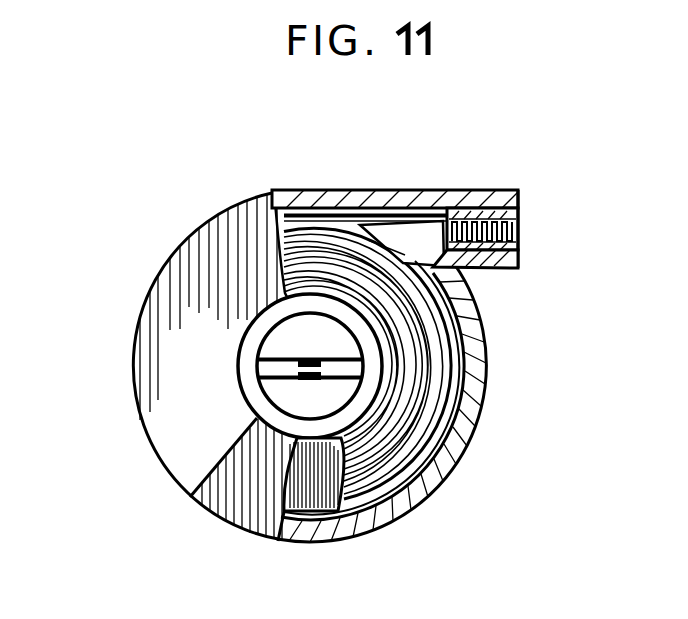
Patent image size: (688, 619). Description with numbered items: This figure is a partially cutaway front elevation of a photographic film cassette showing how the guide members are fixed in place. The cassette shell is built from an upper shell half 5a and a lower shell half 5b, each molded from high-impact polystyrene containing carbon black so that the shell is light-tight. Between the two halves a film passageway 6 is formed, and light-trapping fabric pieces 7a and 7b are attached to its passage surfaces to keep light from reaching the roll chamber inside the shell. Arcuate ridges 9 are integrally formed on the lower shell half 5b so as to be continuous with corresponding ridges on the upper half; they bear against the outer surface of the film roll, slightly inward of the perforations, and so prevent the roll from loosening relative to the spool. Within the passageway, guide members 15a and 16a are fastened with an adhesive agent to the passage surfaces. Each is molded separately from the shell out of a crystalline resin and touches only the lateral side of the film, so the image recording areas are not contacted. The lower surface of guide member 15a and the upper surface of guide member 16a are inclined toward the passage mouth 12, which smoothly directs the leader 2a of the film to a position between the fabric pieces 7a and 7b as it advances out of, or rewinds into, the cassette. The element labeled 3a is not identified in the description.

The leader 2a is at (400, 233).
The pawl 3a is at (322, 505).
The upper shell half 5a is at (175, 362).
The lower shell half 5b is at (238, 513).
The film passageway 6 is at (387, 210).
The light-trapping fabric piece 7a is at (492, 200).
The light-trapping fabric piece 7b is at (521, 267).
The arcuate ridges 9 is at (433, 452).
The passage mouth 12 is at (519, 232).
The guide member 15a is at (432, 210).
The guide member 16a is at (468, 290).